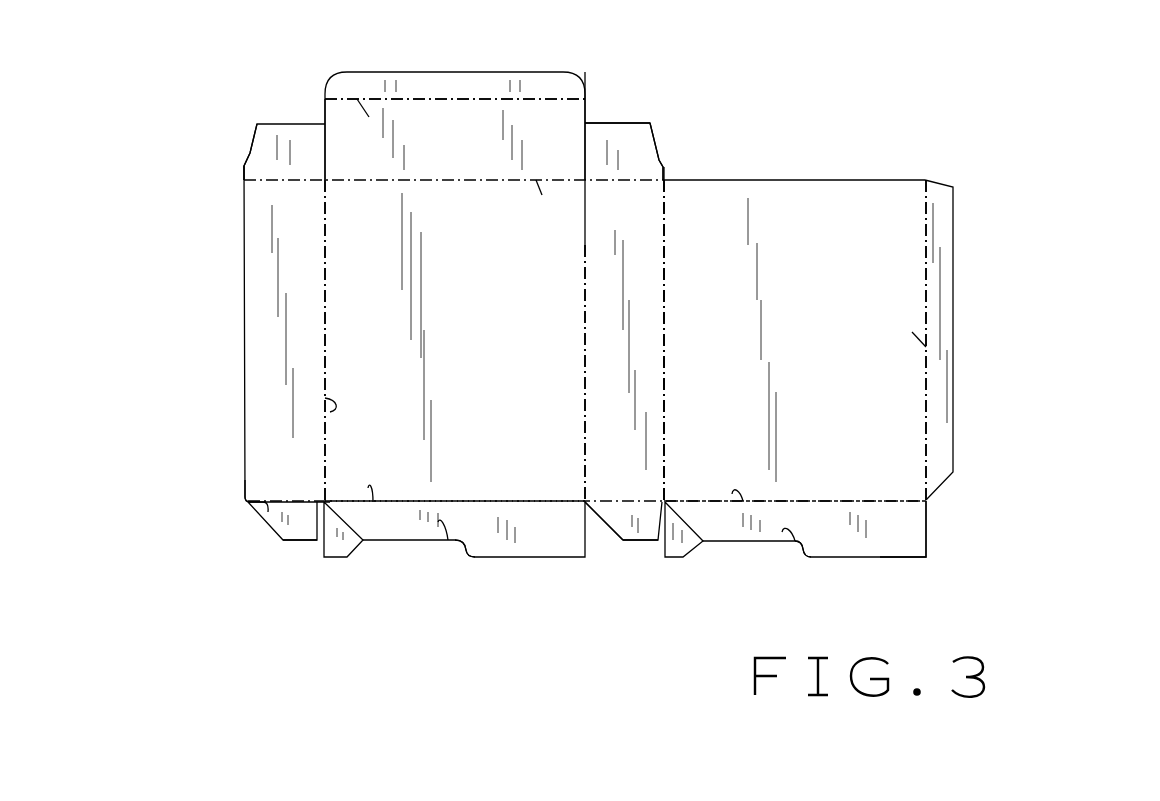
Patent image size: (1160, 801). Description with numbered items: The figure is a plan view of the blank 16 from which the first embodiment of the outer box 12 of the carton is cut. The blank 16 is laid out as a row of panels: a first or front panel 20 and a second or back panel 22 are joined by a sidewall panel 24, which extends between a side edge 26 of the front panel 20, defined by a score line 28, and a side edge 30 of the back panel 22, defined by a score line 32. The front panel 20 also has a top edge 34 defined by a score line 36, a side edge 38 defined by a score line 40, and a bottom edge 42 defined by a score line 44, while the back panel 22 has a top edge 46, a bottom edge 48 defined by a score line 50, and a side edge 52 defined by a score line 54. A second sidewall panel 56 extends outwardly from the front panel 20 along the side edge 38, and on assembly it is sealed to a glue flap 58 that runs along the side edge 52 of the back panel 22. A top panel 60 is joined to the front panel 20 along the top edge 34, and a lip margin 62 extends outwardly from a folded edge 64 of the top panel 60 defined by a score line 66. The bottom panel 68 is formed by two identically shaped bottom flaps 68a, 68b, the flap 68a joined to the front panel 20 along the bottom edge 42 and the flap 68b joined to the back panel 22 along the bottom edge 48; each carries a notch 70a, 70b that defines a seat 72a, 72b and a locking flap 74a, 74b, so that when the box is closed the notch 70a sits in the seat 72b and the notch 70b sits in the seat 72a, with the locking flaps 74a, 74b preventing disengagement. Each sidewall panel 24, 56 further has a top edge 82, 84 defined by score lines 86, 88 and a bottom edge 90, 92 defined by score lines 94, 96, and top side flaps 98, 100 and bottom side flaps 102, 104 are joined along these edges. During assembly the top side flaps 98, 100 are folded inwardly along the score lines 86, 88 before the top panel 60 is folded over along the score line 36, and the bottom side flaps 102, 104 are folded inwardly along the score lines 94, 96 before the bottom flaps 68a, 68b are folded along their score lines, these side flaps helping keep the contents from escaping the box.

The outer box 12 is at (851, 137).
The blank 16 is at (222, 271).
The front panel 20 is at (357, 238).
The back panel 22 is at (777, 230).
The sidewall panel 24 is at (643, 230).
The side edge 26 is at (585, 443).
The score line 28 is at (585, 245).
The side edge 30 is at (665, 283).
The score line 32 is at (664, 448).
The top edge 34 is at (358, 180).
The score line 36 is at (542, 195).
The side edge 38 is at (325, 363).
The score line 40 is at (330, 412).
The bottom edge 42 is at (368, 488).
The score line 44 is at (403, 502).
The top edge 46 is at (887, 180).
The bottom edge 48 is at (732, 494).
The score line 50 is at (900, 556).
The side edge 52 is at (912, 332).
The score line 54 is at (927, 397).
The second sidewall panel 56 is at (273, 303).
The glue flap 58 is at (940, 285).
The top panel 60 is at (483, 153).
The lip margin 62 is at (463, 87).
The folded edge 64 is at (398, 99).
The score line 66 is at (369, 117).
The bottom panel 68 is at (505, 576).
The bottom flap 68a is at (487, 547).
The bottom flap 68b is at (912, 522).
The notch 70a is at (458, 562).
The notch 70b is at (796, 552).
The seat 72a is at (438, 522).
The seat 72b is at (782, 532).
The locking flap 74a is at (335, 559).
The locking flap 74b is at (685, 558).
The top edge 82 is at (652, 140).
The top edge 84 is at (267, 178).
The score line 86 is at (618, 137).
The score line 88 is at (302, 180).
The bottom edge 90 is at (608, 505).
The bottom edge 92 is at (258, 517).
The score line 94 is at (625, 540).
The score line 96 is at (297, 500).
The top side flap 98 is at (618, 180).
The top side flap 100 is at (268, 145).
The bottom side flap 102 is at (637, 530).
The bottom side flap 104 is at (299, 527).